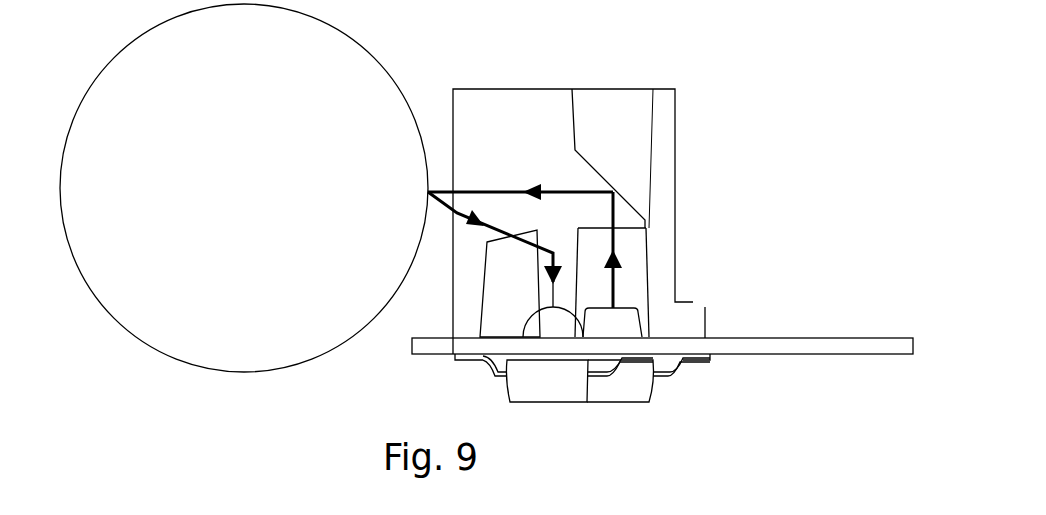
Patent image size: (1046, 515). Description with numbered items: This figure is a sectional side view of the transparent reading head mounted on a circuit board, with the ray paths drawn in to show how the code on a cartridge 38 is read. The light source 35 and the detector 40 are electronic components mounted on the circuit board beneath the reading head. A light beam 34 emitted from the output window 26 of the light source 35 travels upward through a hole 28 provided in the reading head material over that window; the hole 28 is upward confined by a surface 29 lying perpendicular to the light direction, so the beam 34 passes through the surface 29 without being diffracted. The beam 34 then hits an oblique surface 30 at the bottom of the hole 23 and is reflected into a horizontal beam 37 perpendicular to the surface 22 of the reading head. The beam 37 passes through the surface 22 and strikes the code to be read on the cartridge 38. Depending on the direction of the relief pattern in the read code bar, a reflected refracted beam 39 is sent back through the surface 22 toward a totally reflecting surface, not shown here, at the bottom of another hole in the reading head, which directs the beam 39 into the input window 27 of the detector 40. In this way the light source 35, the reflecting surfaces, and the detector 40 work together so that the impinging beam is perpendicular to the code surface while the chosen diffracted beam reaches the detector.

The cartridge 38 is at (343, 33).
The surface 22 is at (450, 120).
The beam 37 is at (497, 191).
The reflected refracted beam 39 is at (526, 243).
The light beam 34 is at (614, 281).
The hole 23 is at (608, 128).
The oblique surface 30 is at (620, 226).
The surface 29 is at (645, 220).
The hole 28 is at (627, 250).
The output window 26 is at (622, 308).
The input window 27 is at (527, 322).
The detector 40 is at (548, 380).
The light source 35 is at (628, 383).